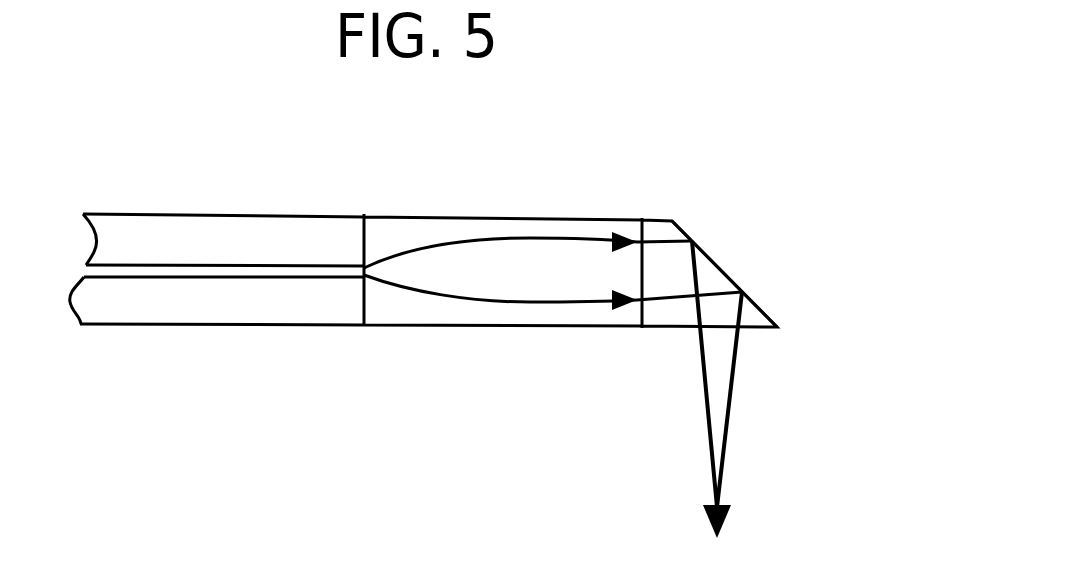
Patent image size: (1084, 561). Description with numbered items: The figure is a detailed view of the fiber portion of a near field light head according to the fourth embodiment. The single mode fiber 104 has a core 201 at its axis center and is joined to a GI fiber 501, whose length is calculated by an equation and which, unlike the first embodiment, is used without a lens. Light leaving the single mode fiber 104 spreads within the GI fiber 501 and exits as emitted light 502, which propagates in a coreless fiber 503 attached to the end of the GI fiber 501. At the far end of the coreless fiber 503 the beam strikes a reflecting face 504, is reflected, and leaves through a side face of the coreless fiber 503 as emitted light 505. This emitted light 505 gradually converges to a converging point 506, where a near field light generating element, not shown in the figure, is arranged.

The single mode fiber 104 is at (175, 303).
The core 201 is at (238, 270).
The GI fiber 501 is at (418, 305).
The emitted light 502 is at (671, 298).
The coreless fiber 503 is at (663, 315).
The reflecting face 504 is at (717, 280).
The emitted light 505 is at (733, 390).
The converging point 506 is at (722, 530).